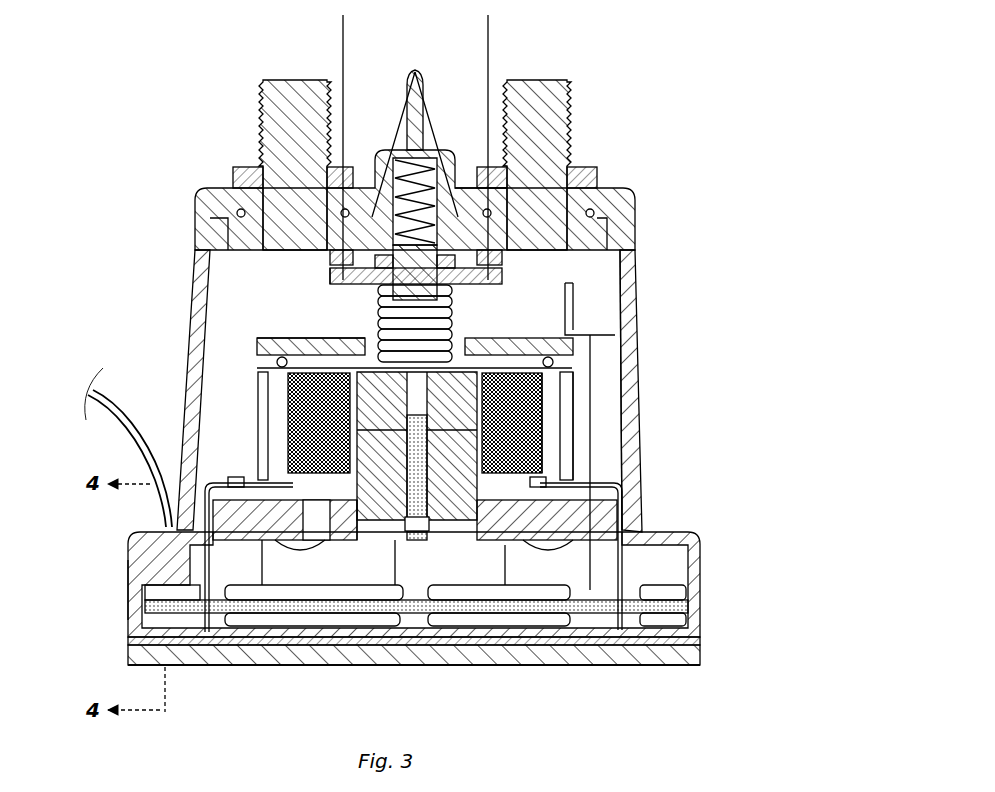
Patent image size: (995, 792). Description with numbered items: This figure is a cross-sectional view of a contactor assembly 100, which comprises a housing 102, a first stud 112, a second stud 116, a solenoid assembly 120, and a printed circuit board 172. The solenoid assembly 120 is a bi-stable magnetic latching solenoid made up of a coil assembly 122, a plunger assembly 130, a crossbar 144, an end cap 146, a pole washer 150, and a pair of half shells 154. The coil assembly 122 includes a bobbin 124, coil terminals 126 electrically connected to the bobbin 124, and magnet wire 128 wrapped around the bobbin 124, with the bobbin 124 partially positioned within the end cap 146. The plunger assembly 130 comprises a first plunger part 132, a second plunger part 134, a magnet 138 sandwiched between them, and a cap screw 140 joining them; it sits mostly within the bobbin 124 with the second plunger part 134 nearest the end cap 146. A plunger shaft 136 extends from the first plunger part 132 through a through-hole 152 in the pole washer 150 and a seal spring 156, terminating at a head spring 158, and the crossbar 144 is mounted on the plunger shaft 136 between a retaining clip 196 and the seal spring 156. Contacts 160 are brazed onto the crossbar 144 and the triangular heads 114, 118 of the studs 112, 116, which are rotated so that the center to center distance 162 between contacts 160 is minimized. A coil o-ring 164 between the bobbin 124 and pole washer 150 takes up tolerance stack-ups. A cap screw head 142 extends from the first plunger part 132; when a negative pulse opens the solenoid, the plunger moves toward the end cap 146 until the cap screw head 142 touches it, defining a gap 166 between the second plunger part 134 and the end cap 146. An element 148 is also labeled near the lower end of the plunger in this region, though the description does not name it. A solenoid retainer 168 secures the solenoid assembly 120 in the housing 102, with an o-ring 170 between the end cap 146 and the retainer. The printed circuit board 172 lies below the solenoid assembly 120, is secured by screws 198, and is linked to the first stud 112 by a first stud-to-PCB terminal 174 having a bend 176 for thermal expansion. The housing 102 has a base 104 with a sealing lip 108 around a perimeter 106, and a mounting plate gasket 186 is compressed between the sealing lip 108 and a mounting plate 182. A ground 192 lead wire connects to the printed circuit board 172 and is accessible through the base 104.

The contactor assembly 100 is at (165, 125).
The housing 102 is at (616, 188).
The base 104 is at (700, 545).
The perimeter 106 is at (128, 590).
The sealing lip 108 is at (128, 652).
The first stud 112 is at (545, 78).
The triangular head 114 is at (608, 230).
The second stud 116 is at (297, 78).
The triangular head 118 is at (222, 210).
The solenoid assembly 120 is at (603, 363).
The coil assembly 122 is at (545, 428).
The bobbin 124 is at (574, 380).
The coil terminals 126 is at (190, 540).
The magnet wire 128 is at (545, 400).
The plunger assembly 130 is at (352, 320).
The first plunger part 132 is at (322, 337).
The second plunger part 134 is at (333, 505).
The plunger shaft 136 is at (380, 255).
The magnet 138 is at (370, 395).
The cap screw 140 is at (435, 520).
The cap screw head 142 is at (427, 532).
The crossbar 144 is at (566, 284).
The end cap 146 is at (505, 546).
The plunger tip 148 is at (416, 534).
The pole washer 150 is at (268, 340).
The through-hole 152 is at (584, 336).
The half shells 154 is at (288, 430).
The seal spring 156 is at (455, 318).
The head spring 158 is at (450, 255).
The contacts 160 is at (330, 278).
The center to center distance 162 is at (487, 37).
The coil o-ring 164 is at (262, 362).
The gap 166 is at (360, 524).
The solenoid retainer 168 is at (208, 505).
The o-ring 170 is at (612, 485).
The printed circuit board 172 is at (688, 606).
The first stud-to-PCB terminal 174 is at (592, 452).
The bend 176 is at (566, 614).
The mounting plate 182 is at (665, 662).
The mounting plate gasket 186 is at (700, 640).
The ground 192 is at (128, 425).
The retaining clip 196 is at (472, 200).
The screws 198 is at (275, 627).